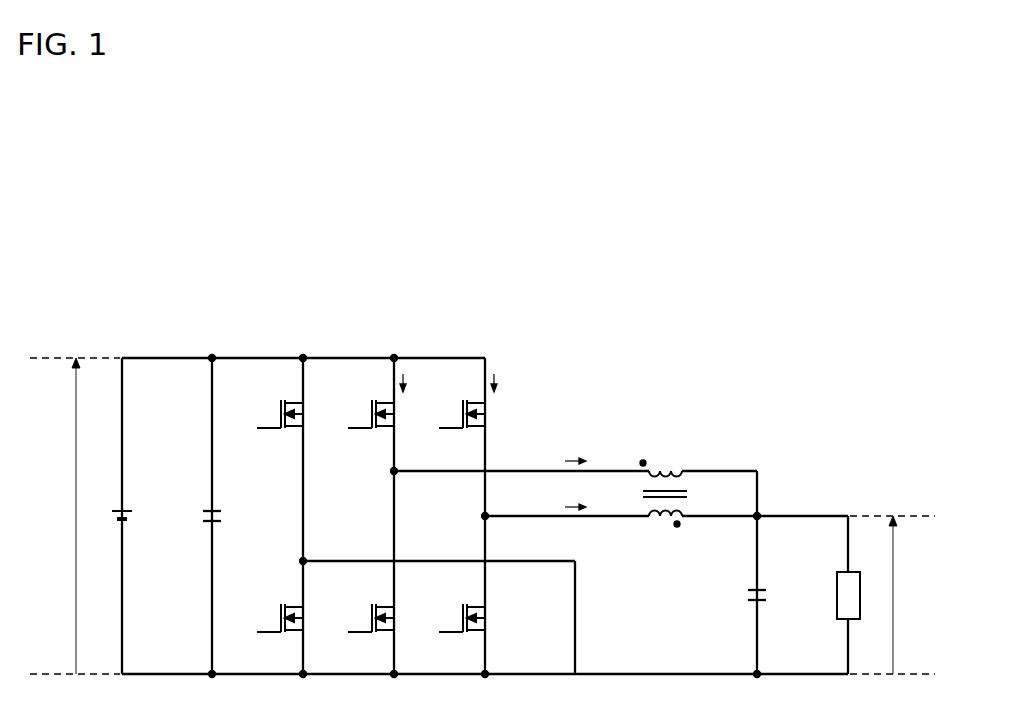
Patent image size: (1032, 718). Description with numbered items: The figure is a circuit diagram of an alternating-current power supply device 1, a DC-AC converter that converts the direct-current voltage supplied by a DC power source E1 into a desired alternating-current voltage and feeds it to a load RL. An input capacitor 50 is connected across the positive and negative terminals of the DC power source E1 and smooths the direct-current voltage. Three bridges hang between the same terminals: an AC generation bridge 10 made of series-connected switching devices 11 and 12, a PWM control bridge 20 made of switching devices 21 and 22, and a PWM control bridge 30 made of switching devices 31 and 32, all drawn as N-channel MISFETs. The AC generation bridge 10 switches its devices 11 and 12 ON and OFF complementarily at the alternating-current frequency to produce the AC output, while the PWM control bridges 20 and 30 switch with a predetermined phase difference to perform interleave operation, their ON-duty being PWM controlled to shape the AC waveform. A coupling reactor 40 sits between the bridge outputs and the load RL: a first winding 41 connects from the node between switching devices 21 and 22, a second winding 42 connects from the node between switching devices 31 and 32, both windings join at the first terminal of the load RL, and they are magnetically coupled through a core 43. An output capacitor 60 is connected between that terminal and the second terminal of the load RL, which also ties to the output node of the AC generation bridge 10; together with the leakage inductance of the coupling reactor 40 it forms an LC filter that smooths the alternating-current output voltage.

The alternating-current power supply device 1 is at (802, 354).
The AC generation bridge 10 is at (332, 345).
The switching device 11 is at (300, 414).
The switching device 12 is at (300, 618).
The PWM control bridge 20 is at (423, 345).
The switching device 21 is at (391, 414).
The switching device 22 is at (391, 618).
The PWM control bridge 30 is at (514, 345).
The switching device 31 is at (482, 414).
The switching device 32 is at (482, 618).
The coupling reactor 40 is at (693, 423).
The first winding 41 is at (667, 467).
The second winding 42 is at (667, 521).
The core 43 is at (685, 493).
The input capacitor 50 is at (231, 516).
The output capacitor 60 is at (737, 597).
The DC power source E1 is at (140, 520).
The load RL is at (828, 595).